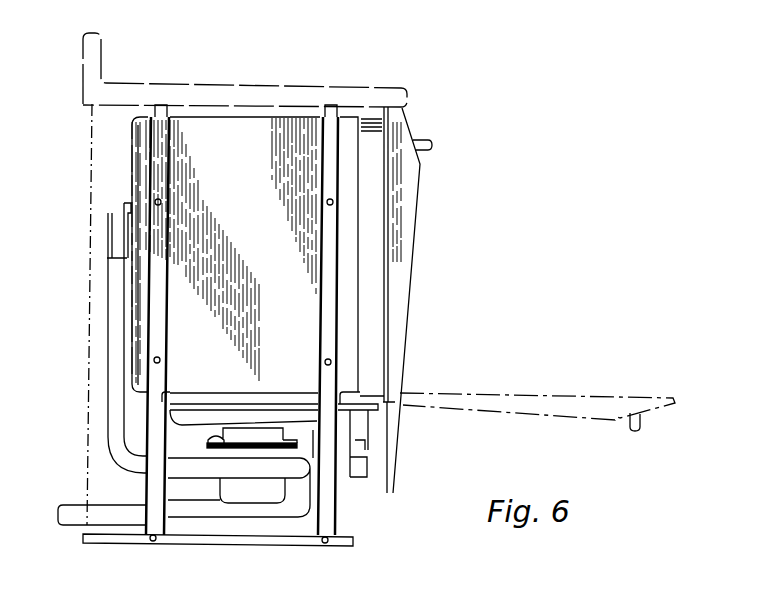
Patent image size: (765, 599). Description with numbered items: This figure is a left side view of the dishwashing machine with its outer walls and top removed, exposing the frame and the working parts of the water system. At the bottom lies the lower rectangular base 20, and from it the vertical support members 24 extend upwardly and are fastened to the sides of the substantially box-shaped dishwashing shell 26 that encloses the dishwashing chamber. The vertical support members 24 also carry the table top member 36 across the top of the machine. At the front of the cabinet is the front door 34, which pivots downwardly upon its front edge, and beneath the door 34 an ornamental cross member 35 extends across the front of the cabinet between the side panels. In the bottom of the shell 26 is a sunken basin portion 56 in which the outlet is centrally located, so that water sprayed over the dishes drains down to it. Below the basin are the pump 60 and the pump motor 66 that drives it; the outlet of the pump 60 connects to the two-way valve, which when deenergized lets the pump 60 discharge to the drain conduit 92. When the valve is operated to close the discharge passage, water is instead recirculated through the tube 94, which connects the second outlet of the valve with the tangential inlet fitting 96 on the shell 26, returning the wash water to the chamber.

The lower rectangular base 20 is at (255, 540).
The vertical support members 24 is at (330, 271).
The dishwashing shell 26 is at (132, 144).
The front door 34 is at (406, 213).
The ornamental cross member 35 is at (393, 475).
The table top member 36 is at (239, 86).
The sunken basin portion 56 is at (188, 418).
The pump 60 is at (212, 435).
The pump motor 66 is at (233, 486).
The drain conduit 92 is at (75, 512).
The tube 94 is at (113, 400).
The tangential inlet fitting 96 is at (128, 212).